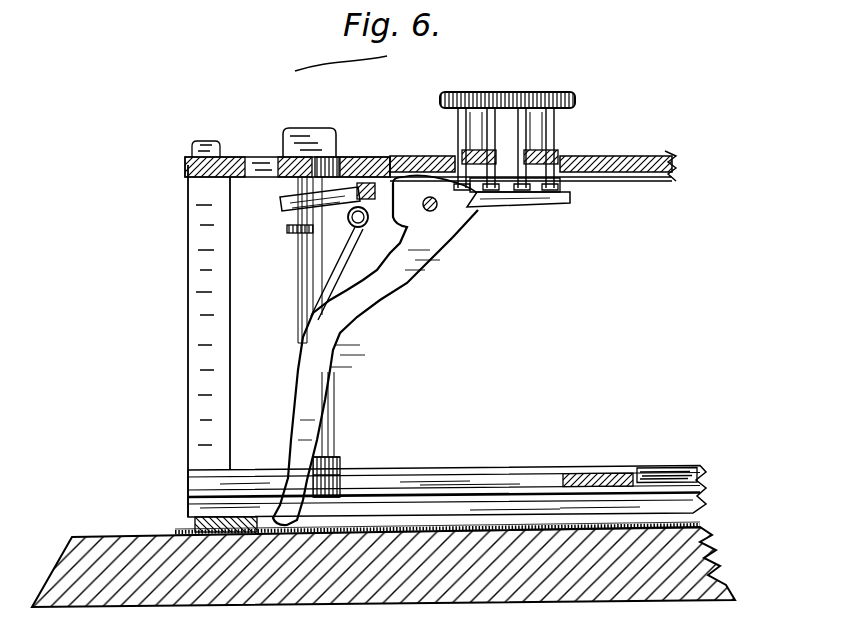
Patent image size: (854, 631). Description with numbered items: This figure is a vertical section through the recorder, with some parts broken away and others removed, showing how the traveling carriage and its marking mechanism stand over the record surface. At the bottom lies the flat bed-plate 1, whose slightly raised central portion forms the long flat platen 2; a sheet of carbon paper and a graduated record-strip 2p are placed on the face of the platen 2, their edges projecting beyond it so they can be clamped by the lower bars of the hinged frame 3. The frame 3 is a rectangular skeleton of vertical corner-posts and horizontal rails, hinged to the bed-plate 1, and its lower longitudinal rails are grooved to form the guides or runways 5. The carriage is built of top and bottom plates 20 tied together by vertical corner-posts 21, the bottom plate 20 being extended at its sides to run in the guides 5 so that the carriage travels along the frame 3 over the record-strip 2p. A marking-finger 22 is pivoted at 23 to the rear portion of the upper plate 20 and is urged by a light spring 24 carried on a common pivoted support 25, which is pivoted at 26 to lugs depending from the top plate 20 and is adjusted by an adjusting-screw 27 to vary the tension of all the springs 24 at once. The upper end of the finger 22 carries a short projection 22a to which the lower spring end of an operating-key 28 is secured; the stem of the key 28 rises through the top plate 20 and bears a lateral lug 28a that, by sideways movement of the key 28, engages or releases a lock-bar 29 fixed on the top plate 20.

The bed-plate 1 is at (97, 565).
The platen 2 is at (286, 528).
The sheet layer edge 2' 2p is at (700, 512).
The hinged frame 3 is at (203, 295).
The guides or runways 5 is at (246, 487).
The top and bottom plates 20 is at (655, 172).
The vertical tie-bolts or corner-posts 21 is at (328, 424).
The marking-fingers 22 is at (389, 293).
The finger projection 22a is at (530, 205).
The pivot 23 is at (436, 210).
The springs 24 is at (346, 256).
The pivoted support 25 is at (290, 205).
The pivot of support 26 is at (372, 152).
The adjusting-screw 27 is at (292, 233).
The operating-key 28 is at (468, 98).
The lateral projection or lug 28a is at (466, 156).
The lock-bar 29 is at (470, 148).